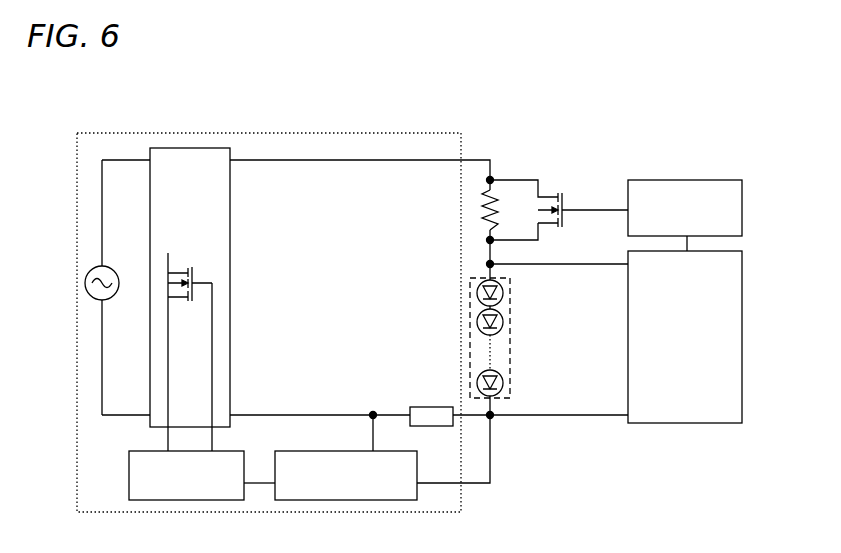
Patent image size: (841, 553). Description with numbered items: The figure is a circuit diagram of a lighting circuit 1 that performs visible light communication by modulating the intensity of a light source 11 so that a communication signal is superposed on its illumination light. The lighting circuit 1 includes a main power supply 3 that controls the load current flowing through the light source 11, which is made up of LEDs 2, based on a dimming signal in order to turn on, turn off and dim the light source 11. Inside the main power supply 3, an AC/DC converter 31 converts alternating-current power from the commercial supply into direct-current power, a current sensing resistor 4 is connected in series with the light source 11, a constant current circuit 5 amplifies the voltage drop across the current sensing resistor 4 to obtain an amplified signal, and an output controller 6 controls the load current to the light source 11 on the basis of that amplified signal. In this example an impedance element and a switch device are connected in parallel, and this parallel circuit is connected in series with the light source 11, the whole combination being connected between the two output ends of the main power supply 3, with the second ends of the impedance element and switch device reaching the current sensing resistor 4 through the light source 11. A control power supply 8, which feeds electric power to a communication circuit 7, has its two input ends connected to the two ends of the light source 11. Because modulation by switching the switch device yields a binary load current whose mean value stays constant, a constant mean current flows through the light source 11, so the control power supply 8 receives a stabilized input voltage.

The lighting circuit 1 is at (93, 118).
The LED 2 is at (503, 293).
The main power supply 3 is at (421, 133).
The current sensing resistor 4 is at (433, 407).
The constant current circuit 5 is at (342, 500).
The output controller 6 is at (194, 500).
The communication circuit 7 is at (742, 210).
The control power supply 8 is at (742, 328).
The light source 11 is at (476, 278).
The AC/DC converter 31 is at (231, 190).